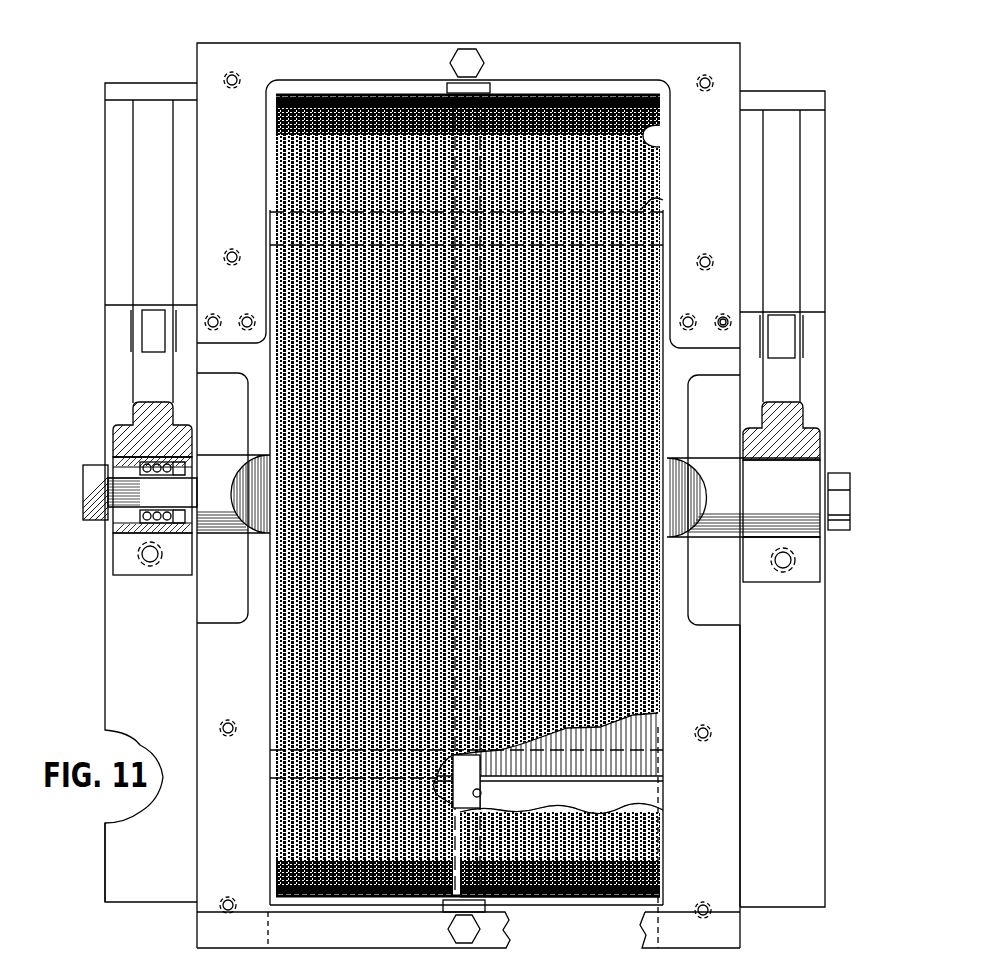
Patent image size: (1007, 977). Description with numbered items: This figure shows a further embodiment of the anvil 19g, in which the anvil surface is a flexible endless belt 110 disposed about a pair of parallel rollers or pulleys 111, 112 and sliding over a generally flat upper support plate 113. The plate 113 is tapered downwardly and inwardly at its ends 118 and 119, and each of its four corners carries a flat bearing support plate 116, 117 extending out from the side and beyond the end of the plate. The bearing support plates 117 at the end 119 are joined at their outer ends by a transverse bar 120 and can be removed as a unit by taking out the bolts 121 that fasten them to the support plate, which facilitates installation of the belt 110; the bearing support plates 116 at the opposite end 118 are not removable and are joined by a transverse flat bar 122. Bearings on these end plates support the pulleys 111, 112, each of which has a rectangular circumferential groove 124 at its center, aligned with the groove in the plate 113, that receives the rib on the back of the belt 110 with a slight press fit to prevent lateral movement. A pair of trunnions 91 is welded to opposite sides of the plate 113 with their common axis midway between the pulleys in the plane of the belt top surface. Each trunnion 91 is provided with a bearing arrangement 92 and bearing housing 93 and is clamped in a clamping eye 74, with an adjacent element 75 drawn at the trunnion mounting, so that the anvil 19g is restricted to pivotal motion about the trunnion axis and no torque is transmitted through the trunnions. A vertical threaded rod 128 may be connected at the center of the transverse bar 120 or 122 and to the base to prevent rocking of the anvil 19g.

The flexible endless belt 110 is at (348, 113).
The roller or pulley 111 is at (647, 793).
The roller or pulley 112 is at (658, 133).
The upper support plate 113 is at (647, 732).
The bearing support plate 116 is at (732, 877).
The bearing support plate 117 is at (197, 118).
The end of plate 118 is at (633, 777).
The end of plate 119 is at (630, 210).
The transverse bar 120 is at (608, 50).
The bolt 121 is at (723, 323).
The transverse flat bar 122 is at (252, 933).
The circumferential groove 124 is at (480, 795).
The vertical threaded rod 128 is at (472, 933).
The anvil 19g is at (608, 898).
The clamping eye 74 is at (815, 565).
The bearing cap 75 is at (807, 473).
The trunnion 91 is at (185, 485).
The bearing arrangement 92 is at (143, 530).
The bearing housing 93 is at (118, 457).